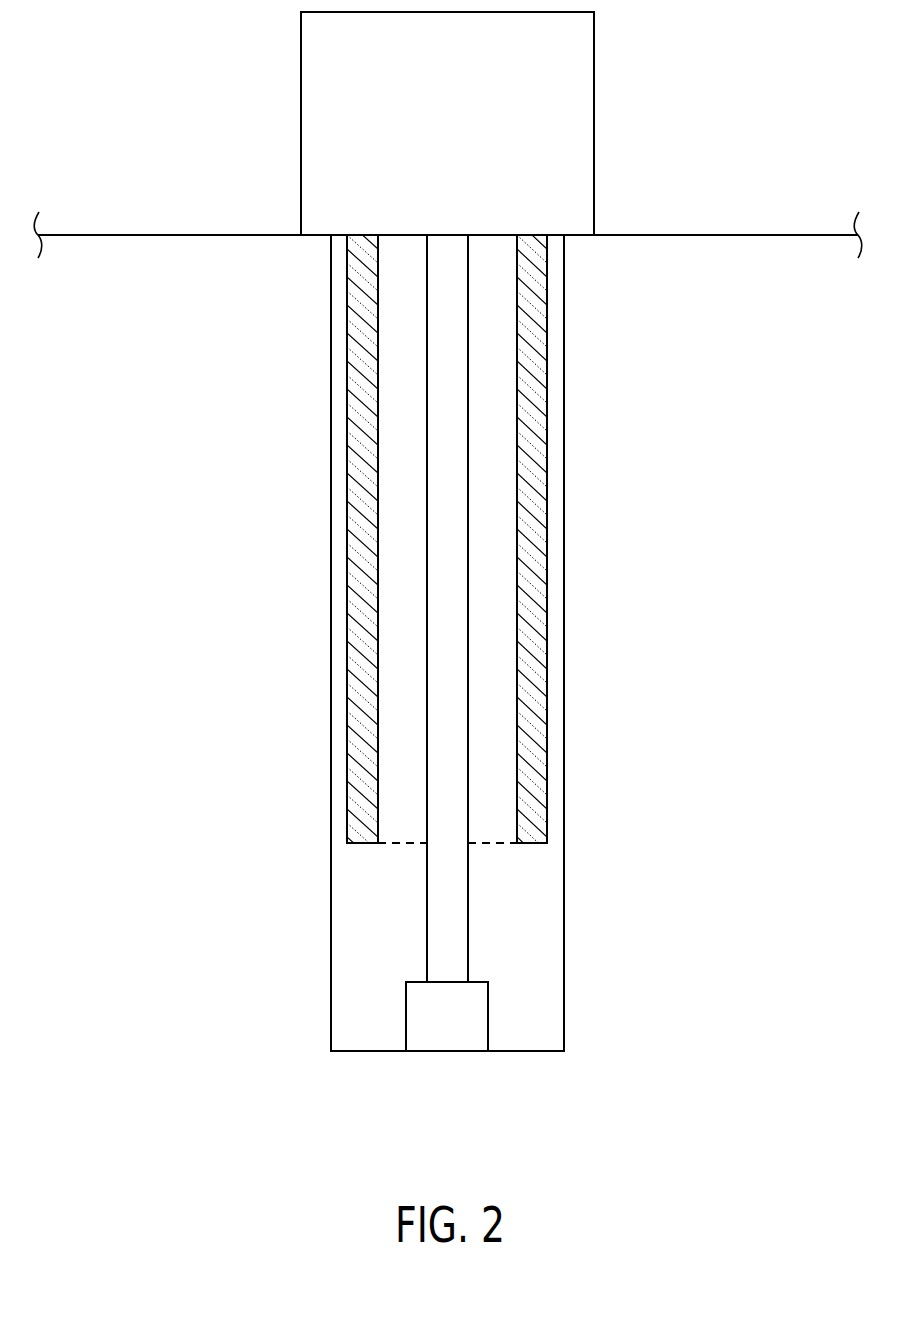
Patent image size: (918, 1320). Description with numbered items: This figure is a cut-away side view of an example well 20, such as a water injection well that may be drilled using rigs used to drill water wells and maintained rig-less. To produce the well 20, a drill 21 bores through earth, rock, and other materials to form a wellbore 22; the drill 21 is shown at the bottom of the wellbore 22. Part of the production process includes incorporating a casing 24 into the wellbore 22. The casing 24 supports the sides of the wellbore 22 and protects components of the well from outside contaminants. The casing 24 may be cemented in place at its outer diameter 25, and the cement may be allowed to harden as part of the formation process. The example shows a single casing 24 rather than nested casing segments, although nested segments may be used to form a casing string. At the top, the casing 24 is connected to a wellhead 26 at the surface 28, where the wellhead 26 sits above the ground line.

The well 20 is at (143, 550).
The drill 21 is at (470, 1042).
The wellbore 22 is at (547, 948).
The casing 24 is at (358, 745).
The outer diameter 25 is at (336, 671).
The wellhead 26 is at (585, 132).
The surface 28 is at (137, 236).